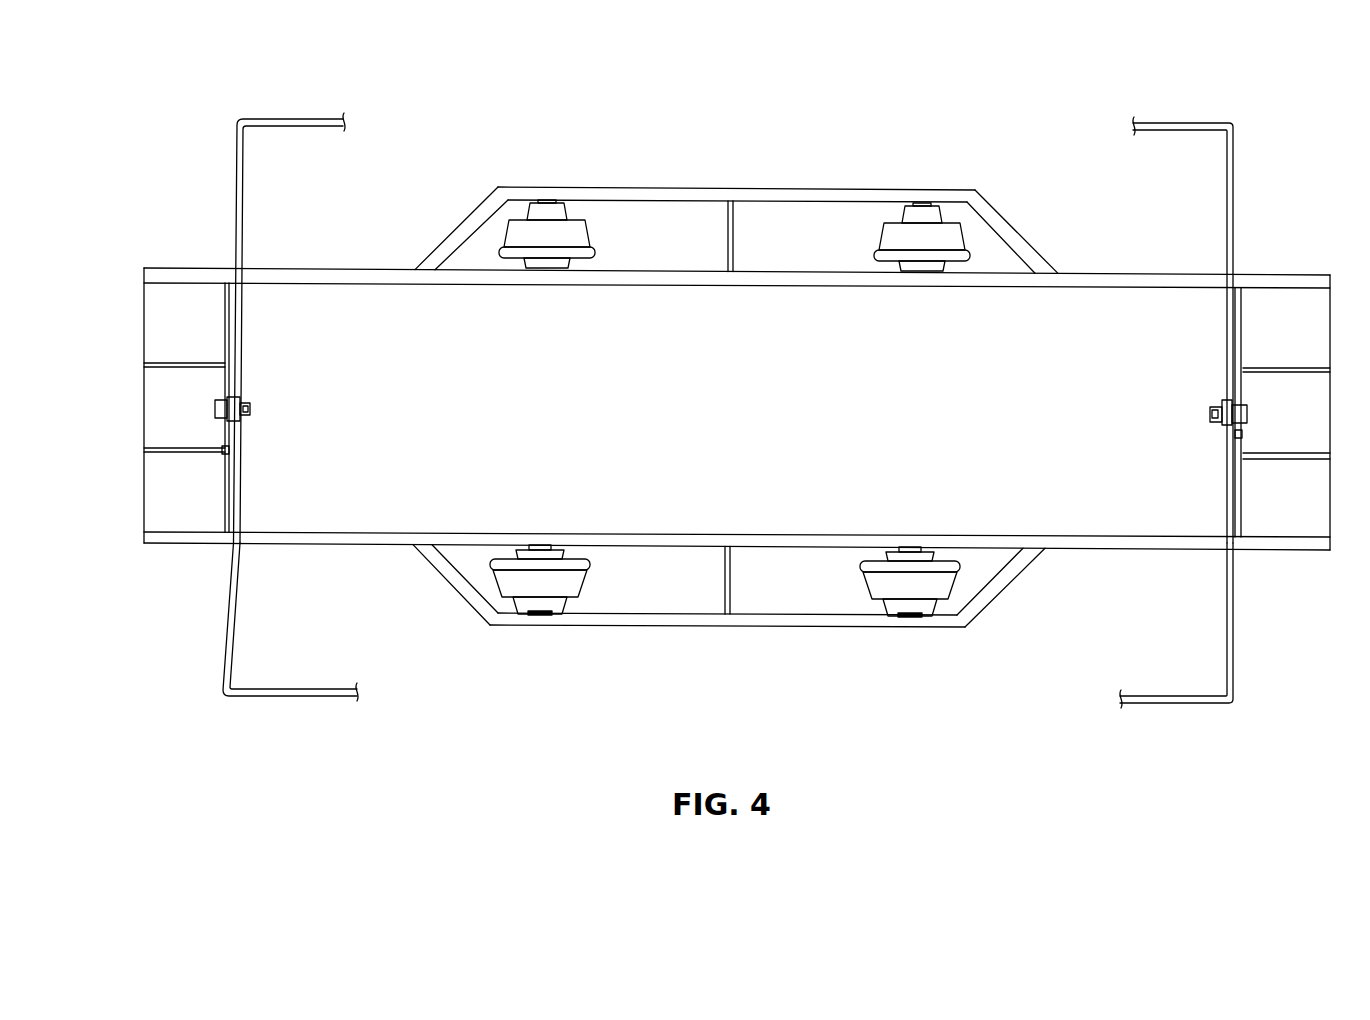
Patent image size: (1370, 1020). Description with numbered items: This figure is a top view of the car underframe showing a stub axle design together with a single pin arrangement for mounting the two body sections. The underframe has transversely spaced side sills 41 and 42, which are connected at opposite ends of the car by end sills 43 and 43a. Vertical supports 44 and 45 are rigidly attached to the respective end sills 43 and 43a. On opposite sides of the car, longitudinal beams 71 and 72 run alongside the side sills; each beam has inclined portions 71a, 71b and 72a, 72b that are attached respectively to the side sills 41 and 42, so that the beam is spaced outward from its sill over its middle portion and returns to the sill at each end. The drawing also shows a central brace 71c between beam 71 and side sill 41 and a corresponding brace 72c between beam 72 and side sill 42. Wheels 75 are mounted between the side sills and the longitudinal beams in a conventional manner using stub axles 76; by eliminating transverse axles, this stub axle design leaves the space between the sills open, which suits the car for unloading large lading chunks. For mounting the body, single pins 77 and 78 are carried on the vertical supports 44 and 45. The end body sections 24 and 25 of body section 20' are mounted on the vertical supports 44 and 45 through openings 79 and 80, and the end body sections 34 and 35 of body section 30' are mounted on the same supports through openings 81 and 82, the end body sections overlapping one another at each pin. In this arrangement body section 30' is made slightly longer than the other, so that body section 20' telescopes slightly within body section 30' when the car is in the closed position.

The body section 20' is at (759, 328).
The end body section 24 is at (238, 165).
The end body section 25 is at (1233, 150).
The body section 30' is at (741, 625).
The end body section 34 is at (227, 637).
The end body section 35 is at (1230, 652).
The side sill 41 is at (1068, 275).
The side sill 42 is at (1060, 543).
The end sill 43 is at (198, 336).
The end sill 43a is at (1303, 341).
The vertical support 44 is at (227, 305).
The vertical support 45 is at (1240, 307).
The longitudinal beam 71 is at (754, 202).
The inclined portion 71a is at (1003, 232).
The inclined portion 71b is at (453, 240).
The center brace of upper frame 71c is at (732, 248).
The longitudinal beam 72 is at (736, 616).
The inclined portion 72a is at (982, 602).
The inclined portion 72b is at (463, 588).
The center brace of lower frame 72c is at (725, 575).
The wheel 75 is at (905, 242).
The stub axle 76 is at (560, 613).
The single pin 77 is at (216, 410).
The single pin 78 is at (1248, 415).
The opening 79 is at (238, 398).
The opening 80 is at (1225, 400).
The opening 81 is at (224, 452).
The opening 82 is at (1236, 435).